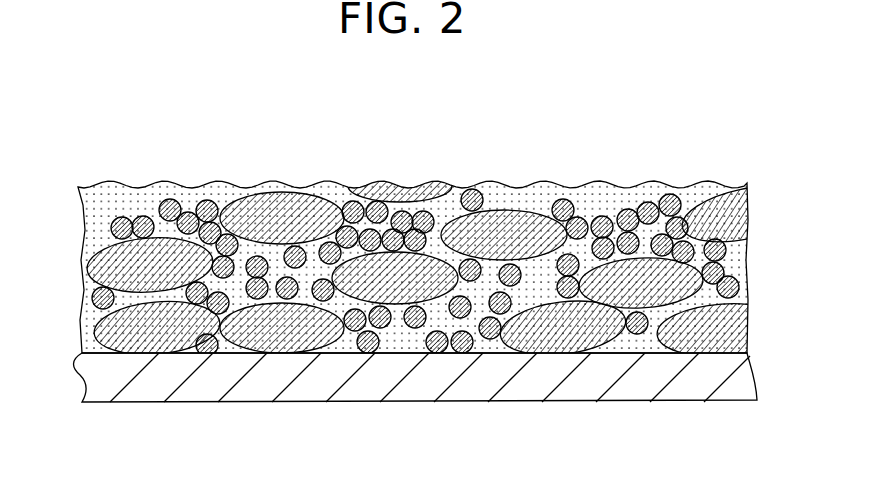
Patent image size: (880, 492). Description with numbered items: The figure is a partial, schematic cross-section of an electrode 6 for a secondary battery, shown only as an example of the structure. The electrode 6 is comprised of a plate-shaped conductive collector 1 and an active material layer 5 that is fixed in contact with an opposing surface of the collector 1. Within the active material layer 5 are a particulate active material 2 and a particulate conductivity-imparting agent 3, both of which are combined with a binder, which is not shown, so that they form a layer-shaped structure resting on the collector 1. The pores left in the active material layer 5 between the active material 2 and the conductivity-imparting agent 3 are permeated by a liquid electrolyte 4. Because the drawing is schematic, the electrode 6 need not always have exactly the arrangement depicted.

The collector 1 is at (394, 396).
The active material 2 is at (292, 193).
The conductivity-imparting agent 3 is at (642, 207).
The liquid electrolyte 4 is at (140, 200).
The active material layer 5 is at (420, 248).
The electrode 6 is at (117, 133).